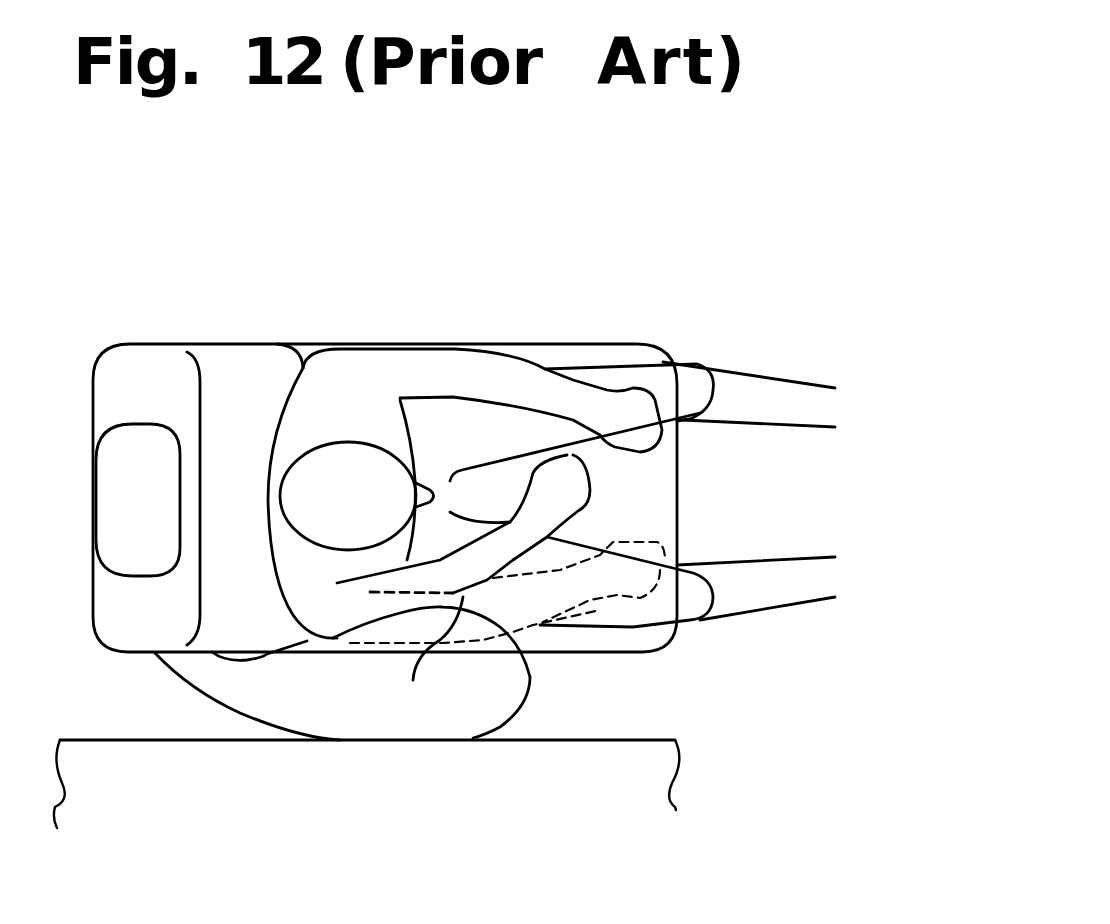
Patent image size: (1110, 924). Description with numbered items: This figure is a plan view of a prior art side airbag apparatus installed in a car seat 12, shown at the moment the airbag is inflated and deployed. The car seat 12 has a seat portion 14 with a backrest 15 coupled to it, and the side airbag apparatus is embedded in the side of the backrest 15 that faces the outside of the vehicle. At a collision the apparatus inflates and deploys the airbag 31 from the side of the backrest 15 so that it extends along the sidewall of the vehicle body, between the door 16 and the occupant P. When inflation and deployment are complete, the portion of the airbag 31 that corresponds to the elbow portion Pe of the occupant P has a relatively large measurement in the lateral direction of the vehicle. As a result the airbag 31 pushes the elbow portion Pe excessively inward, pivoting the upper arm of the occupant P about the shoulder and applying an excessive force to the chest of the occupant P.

The car seat 12 is at (314, 334).
The seat portion 14 is at (580, 342).
The backrest 15 is at (218, 352).
The door 16 is at (583, 750).
The airbag 31 is at (523, 697).
The occupant P is at (423, 358).
The elbow portion Pe is at (342, 706).